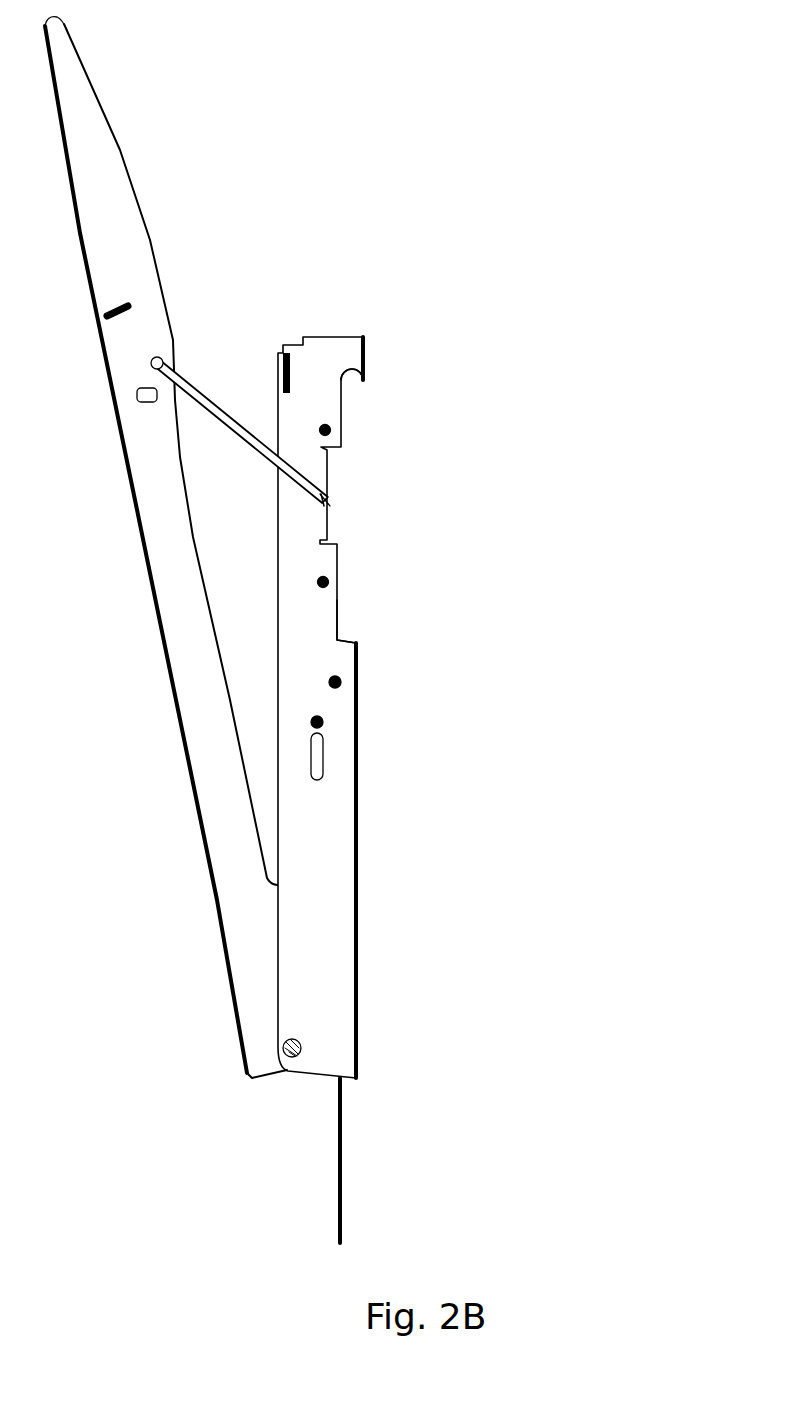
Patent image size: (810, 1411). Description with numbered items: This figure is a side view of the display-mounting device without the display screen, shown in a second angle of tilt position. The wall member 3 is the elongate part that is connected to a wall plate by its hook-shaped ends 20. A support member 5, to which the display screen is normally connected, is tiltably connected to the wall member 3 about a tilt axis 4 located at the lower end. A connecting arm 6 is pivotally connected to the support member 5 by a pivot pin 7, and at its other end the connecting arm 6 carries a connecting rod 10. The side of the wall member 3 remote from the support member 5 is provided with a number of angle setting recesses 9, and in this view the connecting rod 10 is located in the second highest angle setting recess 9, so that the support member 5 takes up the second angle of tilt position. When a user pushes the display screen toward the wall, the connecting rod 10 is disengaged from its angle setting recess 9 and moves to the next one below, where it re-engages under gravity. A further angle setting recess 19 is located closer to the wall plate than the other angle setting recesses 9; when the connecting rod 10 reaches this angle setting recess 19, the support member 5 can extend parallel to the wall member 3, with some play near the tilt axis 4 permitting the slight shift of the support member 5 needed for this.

The wall member 3 is at (320, 910).
The tilt axis 4 is at (287, 1080).
The support member 5 is at (107, 173).
The connecting arm 6 is at (220, 400).
The pivot pin 7 is at (157, 357).
The angle setting recesses 9 is at (327, 447).
The connecting rod 10 is at (325, 507).
The angle setting recess 19 is at (340, 615).
The hook-shaped ends 20 is at (365, 365).